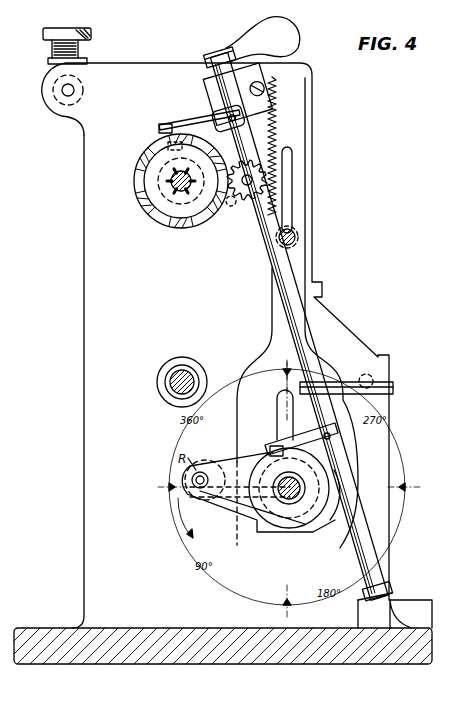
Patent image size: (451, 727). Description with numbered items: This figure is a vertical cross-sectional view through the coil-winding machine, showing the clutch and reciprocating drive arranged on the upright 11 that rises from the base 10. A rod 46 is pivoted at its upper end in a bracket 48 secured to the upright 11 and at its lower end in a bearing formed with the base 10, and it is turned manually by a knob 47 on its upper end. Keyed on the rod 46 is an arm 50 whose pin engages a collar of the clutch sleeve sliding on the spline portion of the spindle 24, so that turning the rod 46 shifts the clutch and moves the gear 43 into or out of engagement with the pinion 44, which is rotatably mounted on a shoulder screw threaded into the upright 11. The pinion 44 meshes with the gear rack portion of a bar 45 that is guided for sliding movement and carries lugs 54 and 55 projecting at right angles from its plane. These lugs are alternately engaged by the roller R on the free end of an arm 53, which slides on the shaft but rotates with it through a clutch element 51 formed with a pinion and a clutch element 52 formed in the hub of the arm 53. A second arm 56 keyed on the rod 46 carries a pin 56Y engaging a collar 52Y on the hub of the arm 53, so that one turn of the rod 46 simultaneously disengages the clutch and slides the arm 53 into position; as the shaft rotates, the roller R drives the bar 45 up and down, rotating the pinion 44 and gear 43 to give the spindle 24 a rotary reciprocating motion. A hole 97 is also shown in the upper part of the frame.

The base 10 is at (134, 660).
The upright 11 is at (84, 455).
The spindle 24 is at (181, 181).
The gear 43 is at (227, 205).
The pinion 44 is at (243, 198).
The bar 45 is at (300, 145).
The rod 46 is at (266, 262).
The knob 47 is at (296, 42).
The bracket 48 is at (198, 98).
The arm 50 is at (194, 122).
The clutch element 51 is at (290, 246).
The clutch element 52 is at (290, 527).
The collar 52Y is at (300, 522).
The arm 53 is at (218, 466).
The lug 54 is at (392, 388).
The lug 55 is at (231, 523).
The arm 56 is at (336, 426).
The pin 56Y is at (268, 447).
The hole 97 is at (74, 92).